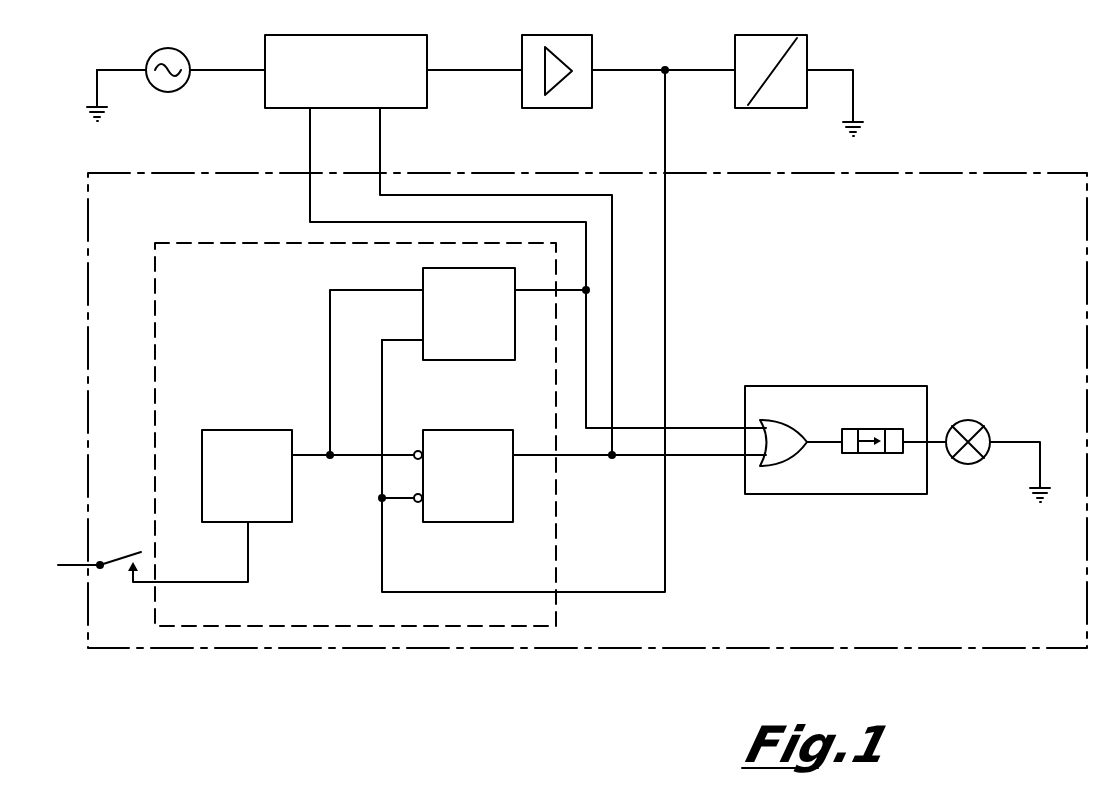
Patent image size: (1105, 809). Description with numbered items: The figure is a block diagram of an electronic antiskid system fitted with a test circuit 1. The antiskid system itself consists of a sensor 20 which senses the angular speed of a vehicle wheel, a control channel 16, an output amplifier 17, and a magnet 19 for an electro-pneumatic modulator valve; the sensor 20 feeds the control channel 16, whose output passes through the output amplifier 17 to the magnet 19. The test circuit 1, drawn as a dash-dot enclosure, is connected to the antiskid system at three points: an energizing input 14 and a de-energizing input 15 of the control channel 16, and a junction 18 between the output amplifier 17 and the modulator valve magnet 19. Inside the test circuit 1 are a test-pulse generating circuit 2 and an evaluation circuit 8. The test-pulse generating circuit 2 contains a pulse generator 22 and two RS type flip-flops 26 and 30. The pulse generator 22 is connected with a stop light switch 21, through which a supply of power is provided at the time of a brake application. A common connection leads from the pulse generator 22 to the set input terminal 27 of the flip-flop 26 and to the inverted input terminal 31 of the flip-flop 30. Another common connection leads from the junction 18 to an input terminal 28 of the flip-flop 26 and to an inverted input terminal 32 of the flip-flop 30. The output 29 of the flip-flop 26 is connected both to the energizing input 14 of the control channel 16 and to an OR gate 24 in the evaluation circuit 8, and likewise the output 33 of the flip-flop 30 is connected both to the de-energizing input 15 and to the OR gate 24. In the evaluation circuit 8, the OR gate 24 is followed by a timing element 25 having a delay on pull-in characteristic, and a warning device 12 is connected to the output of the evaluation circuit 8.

The test circuit 1 is at (612, 648).
The test-pulse generating circuit 2 is at (307, 627).
The evaluation circuit 8 is at (836, 453).
The warning device 12 is at (987, 413).
The energizing input 14 is at (308, 110).
The de-energizing input 15 is at (382, 110).
The control channel 16 is at (325, 35).
The output amplifier 17 is at (550, 35).
The junction 18 is at (665, 67).
The magnet 19 is at (766, 35).
The sensor 20 is at (184, 56).
The stop light switch 21 is at (118, 568).
The pulse generator 22 is at (240, 430).
The OR gate 24 is at (790, 426).
The timing element 25 is at (872, 428).
The flip-flop 26 is at (470, 360).
The set input terminal 27 is at (421, 290).
The input terminal 28 is at (421, 340).
The output 29 is at (517, 290).
The flip-flop 30 is at (470, 522).
The inverted input terminal 31 is at (418, 451).
The inverted input terminal 32 is at (417, 502).
The output 33 is at (515, 455).